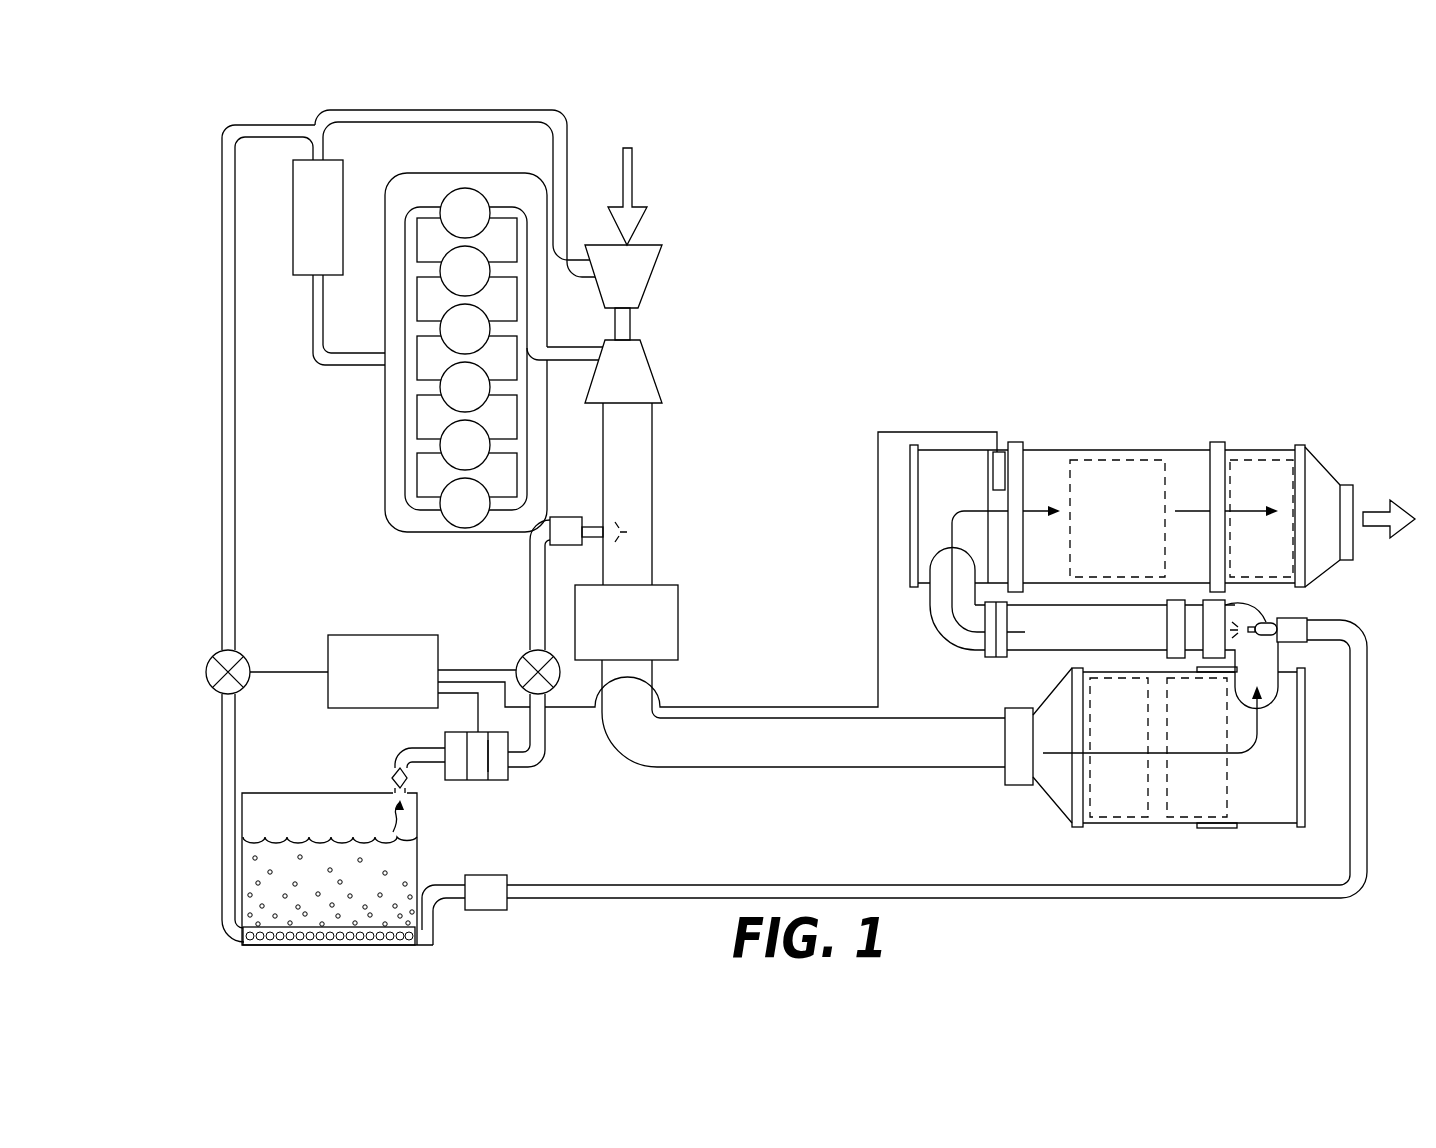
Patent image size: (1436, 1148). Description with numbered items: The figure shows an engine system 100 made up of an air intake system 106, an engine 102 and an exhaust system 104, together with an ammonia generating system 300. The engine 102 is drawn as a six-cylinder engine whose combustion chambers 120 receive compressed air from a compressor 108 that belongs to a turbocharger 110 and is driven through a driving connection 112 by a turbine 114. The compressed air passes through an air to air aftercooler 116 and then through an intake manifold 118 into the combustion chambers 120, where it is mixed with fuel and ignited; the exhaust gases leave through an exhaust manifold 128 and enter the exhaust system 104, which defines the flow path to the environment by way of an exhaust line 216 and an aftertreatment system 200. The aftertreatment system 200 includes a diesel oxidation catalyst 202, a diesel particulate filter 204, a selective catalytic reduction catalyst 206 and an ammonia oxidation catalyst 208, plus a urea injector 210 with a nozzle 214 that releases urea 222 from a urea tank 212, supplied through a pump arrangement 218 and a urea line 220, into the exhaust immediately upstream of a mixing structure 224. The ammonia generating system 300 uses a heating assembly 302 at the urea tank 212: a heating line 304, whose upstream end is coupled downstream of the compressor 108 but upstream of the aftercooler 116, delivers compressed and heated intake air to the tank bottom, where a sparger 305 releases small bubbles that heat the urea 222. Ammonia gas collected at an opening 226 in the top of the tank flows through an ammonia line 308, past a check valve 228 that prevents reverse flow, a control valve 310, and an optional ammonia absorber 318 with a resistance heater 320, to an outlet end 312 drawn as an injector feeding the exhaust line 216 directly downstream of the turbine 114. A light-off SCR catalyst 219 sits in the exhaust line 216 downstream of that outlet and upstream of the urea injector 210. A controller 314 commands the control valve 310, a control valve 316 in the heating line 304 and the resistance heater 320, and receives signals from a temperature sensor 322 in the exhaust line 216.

The engine system 100 is at (809, 300).
The engine 102 is at (478, 330).
The exhaust system 104 is at (849, 579).
The air intake system 106 is at (441, 101).
The compressor 108 is at (637, 277).
The turbocharger 110 is at (697, 288).
The driving connection 112 is at (622, 327).
The turbine 114 is at (634, 375).
The air to air aftercooler 116 is at (305, 225).
The intake manifold 118 is at (410, 272).
The combustion chambers 120 is at (468, 190).
The exhaust manifold 128 is at (522, 384).
The aftertreatment system 200 is at (1162, 549).
The diesel oxidation catalyst 202 is at (1103, 794).
The diesel particulate filter 204 is at (1182, 794).
The selective catalytic reduction catalyst 206 is at (1103, 561).
The ammonia oxidation catalyst 208 is at (1248, 561).
The urea injector 210 is at (1310, 592).
The urea tank 212 is at (398, 858).
The nozzle 214 is at (1264, 628).
The exhaust line 216 is at (628, 456).
The pump arrangement 218 is at (490, 900).
The SCR catalyst 219 is at (660, 618).
The urea line 220 is at (548, 890).
The urea 222 is at (361, 879).
The mixing structure 224 is at (1173, 630).
The opening 226 is at (390, 783).
The check valve 228 is at (400, 776).
The ammonia generating system 300 is at (431, 833).
The heating assembly 302 is at (219, 932).
The heating line 304 is at (224, 464).
The sparger 305 is at (393, 933).
The ammonia line 308 is at (438, 752).
The control valve 310 is at (537, 657).
The outlet end 312 is at (600, 531).
The controller 314 is at (368, 685).
The control valve 316 is at (213, 662).
The ammonia absorber 318 is at (503, 772).
The resistance heater 320 is at (480, 773).
The temperature sensor 322 is at (998, 467).